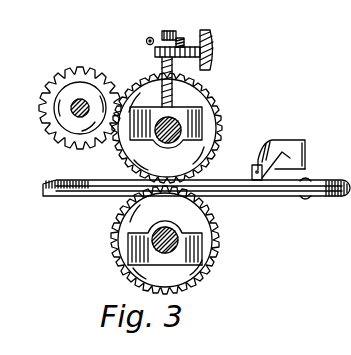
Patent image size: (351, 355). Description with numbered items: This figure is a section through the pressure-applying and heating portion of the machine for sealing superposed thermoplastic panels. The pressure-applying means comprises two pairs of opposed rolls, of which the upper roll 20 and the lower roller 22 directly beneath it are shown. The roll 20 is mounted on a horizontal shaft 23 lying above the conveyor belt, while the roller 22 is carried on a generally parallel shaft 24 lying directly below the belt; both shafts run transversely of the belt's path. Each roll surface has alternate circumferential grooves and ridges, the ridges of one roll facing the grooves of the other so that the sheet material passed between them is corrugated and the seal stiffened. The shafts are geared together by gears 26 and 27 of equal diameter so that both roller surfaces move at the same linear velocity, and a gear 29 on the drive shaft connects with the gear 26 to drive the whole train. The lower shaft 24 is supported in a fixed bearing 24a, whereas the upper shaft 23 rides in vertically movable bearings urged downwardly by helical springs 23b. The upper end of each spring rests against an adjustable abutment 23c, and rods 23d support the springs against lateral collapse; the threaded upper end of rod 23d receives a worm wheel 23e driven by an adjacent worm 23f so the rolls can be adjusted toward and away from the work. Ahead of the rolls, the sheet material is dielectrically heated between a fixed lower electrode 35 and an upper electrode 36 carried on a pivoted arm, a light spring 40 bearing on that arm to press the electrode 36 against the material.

The roll 20 is at (178, 128).
The lower roller 22 is at (166, 240).
The horizontal shaft 23 is at (170, 145).
The helical springs 23b is at (165, 70).
The abutment 23c is at (156, 52).
The rods 23d is at (205, 63).
The worm wheel 23e is at (163, 33).
The worm 23f is at (136, 39).
The shaft 24 is at (160, 228).
The fixed bearing 24a is at (206, 259).
The gear 26 is at (206, 101).
The gear 27 is at (115, 252).
The gear 29 is at (46, 111).
The lower electrode 35 is at (263, 197).
The upper electrode 36 is at (252, 176).
The light spring 40 is at (278, 140).